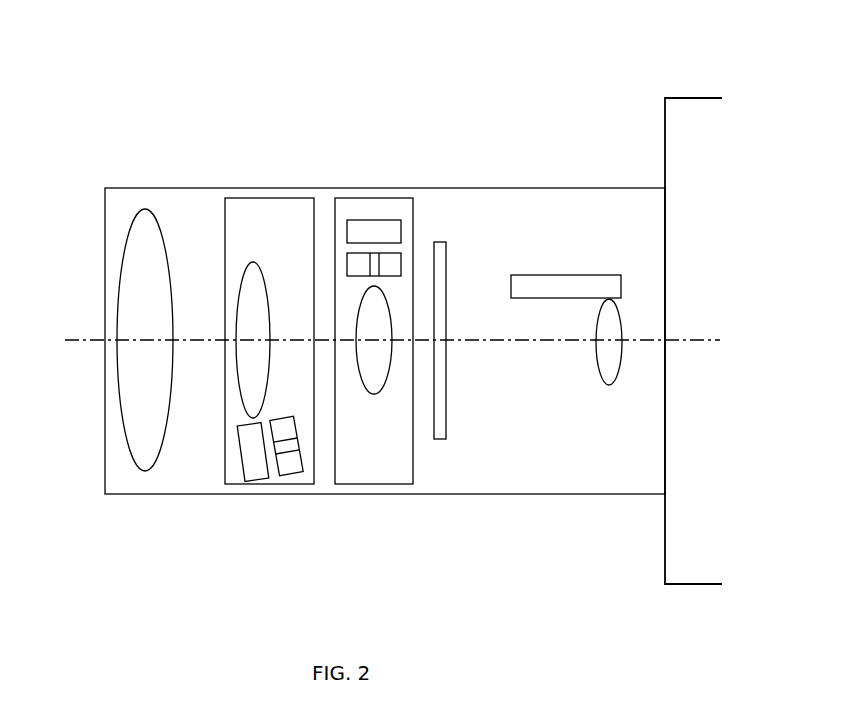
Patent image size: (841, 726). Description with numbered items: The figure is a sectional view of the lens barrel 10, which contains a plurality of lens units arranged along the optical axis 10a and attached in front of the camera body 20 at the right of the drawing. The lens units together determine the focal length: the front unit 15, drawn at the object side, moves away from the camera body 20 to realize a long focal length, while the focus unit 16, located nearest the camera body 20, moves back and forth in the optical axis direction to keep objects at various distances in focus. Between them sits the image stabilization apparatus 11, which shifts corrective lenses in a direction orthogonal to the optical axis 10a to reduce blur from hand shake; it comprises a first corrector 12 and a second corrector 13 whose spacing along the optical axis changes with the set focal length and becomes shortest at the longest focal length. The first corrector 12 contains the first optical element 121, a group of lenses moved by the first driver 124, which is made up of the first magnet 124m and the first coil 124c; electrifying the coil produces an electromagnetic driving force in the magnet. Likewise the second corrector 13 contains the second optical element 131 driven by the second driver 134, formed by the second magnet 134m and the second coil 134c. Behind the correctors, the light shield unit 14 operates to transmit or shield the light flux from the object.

The lens barrel 10 is at (617, 210).
The optical axis 10a is at (90, 338).
The image stabilization apparatus 11 is at (345, 78).
The first corrector 12 is at (275, 207).
The first optical element 121 is at (252, 285).
The first driver 124 is at (356, 553).
The first magnet 124m is at (253, 473).
The first coil 124c is at (290, 470).
The second corrector 13 is at (347, 210).
The second optical element 131 is at (370, 308).
The second driver 134 is at (453, 117).
The second magnet 134m is at (365, 230).
The second coil 134c is at (392, 265).
The light shield unit 14 is at (440, 247).
The front unit 15 is at (147, 223).
The focus unit 16 is at (610, 332).
The camera body 20 is at (692, 117).